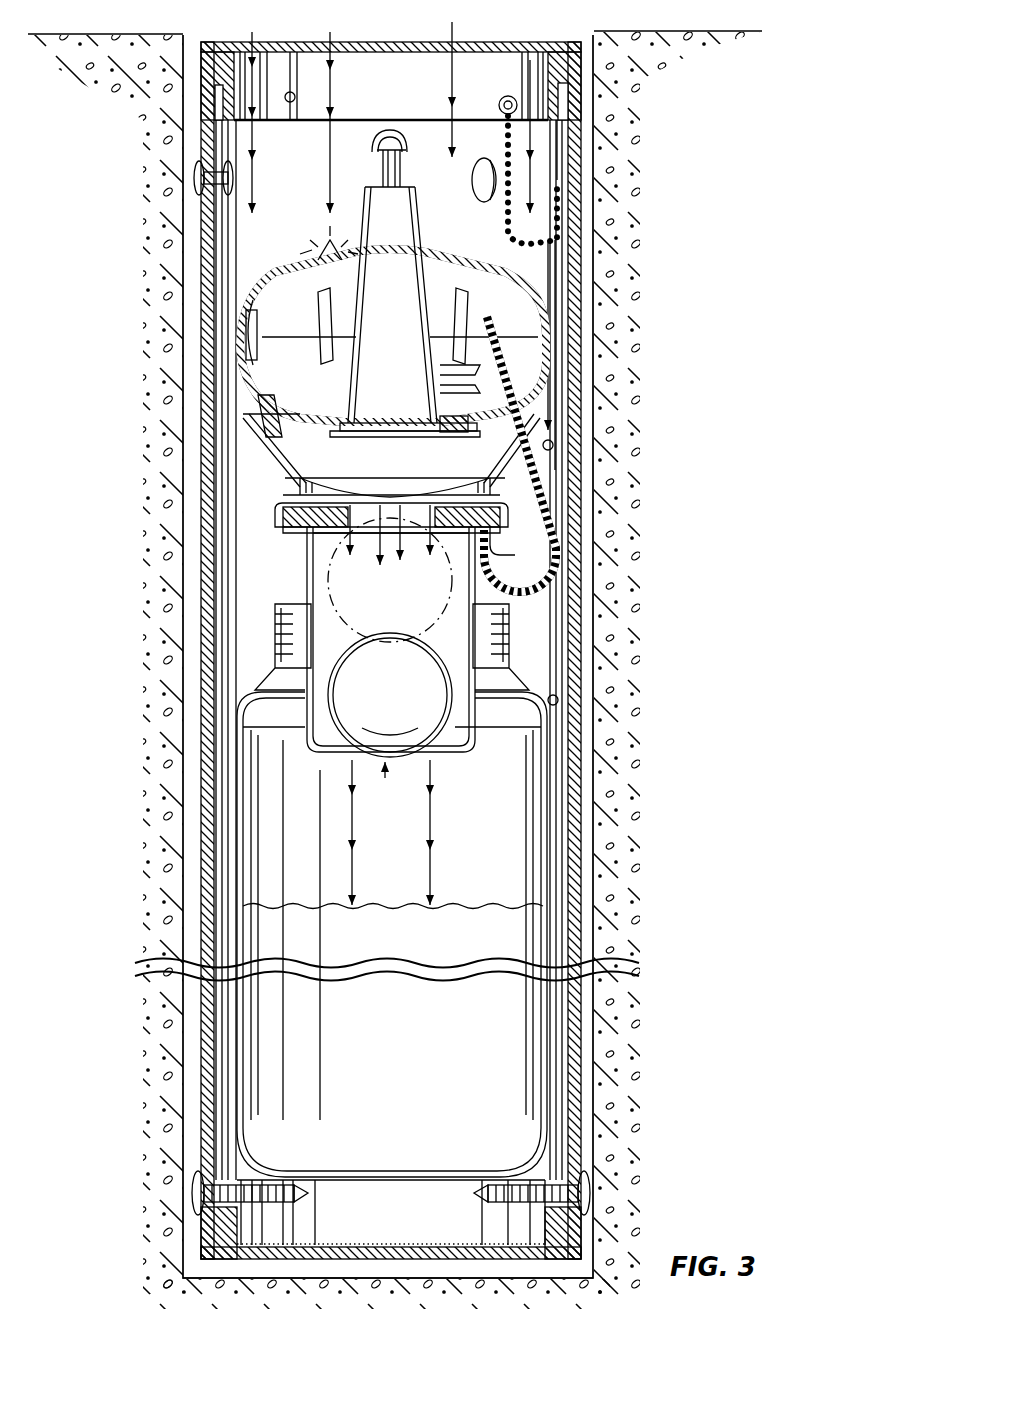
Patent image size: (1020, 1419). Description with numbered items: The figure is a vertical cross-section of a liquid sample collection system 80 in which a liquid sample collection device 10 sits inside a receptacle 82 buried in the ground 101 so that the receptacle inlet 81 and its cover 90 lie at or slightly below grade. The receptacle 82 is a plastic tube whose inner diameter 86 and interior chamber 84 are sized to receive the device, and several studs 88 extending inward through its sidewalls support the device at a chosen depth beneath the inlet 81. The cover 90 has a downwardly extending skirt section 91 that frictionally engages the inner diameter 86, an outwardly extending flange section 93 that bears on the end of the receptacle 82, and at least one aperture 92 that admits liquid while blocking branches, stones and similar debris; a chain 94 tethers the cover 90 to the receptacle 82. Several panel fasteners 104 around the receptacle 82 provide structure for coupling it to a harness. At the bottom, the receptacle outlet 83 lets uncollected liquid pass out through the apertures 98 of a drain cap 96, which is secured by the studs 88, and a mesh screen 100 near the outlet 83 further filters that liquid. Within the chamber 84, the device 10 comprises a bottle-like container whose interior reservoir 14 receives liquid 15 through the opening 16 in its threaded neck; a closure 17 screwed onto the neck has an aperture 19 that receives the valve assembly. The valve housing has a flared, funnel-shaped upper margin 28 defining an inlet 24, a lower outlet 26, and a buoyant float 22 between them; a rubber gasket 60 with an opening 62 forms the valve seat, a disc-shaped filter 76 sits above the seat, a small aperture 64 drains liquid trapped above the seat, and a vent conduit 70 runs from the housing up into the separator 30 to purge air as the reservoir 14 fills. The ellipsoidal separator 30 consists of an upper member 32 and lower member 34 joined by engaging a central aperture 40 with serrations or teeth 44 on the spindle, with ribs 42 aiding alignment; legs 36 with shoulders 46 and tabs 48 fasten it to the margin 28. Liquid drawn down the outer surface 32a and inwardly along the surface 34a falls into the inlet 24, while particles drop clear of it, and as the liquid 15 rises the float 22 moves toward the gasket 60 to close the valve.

The liquid sample collection device 10 is at (440, 112).
The interior reservoir 14 is at (488, 844).
The liquid 15 is at (372, 604).
The opening 16 is at (502, 650).
The closure 17 is at (274, 616).
The aperture 19 is at (318, 582).
The float 22 is at (415, 672).
The inlet 24 is at (388, 432).
The outlet 26 is at (385, 778).
The flared, funnel-shaped upper margin 28 is at (248, 436).
The separator 30 is at (552, 304).
The upper member 32 is at (272, 292).
The outer surface 32a is at (280, 322).
The lower member 34 is at (272, 398).
The surface 34a is at (252, 352).
The legs 36 is at (258, 400).
The central aperture 40 is at (426, 242).
The ribs 42 is at (330, 322).
The serrations or teeth 44 is at (372, 198).
The shoulders 46 is at (302, 430).
The tabs 48 is at (300, 486).
The rubber gasket 60 is at (300, 532).
The opening 62 is at (412, 548).
The small aperture 64 is at (502, 527).
The conduit 70 is at (560, 518).
The filter 76 is at (290, 506).
The liquid sample collection system 80 is at (698, 412).
The inlet 81 is at (391, 86).
The receptacle 82 is at (588, 214).
The outlet 83 is at (391, 1212).
The interior chamber 84 is at (302, 162).
The inner diameter 86 is at (560, 240).
The studs 88 is at (487, 1183).
The cover 90 is at (568, 42).
The skirt section 91 is at (585, 72).
The aperture 92 is at (364, 38).
The flange section 93 is at (214, 42).
The chain 94 is at (500, 140).
The drain cap 96 is at (222, 1256).
The apertures 98 is at (440, 1246).
The mesh screen 100 is at (548, 1230).
The ground 101 is at (395, 670).
The panel fasteners 104 is at (194, 182).